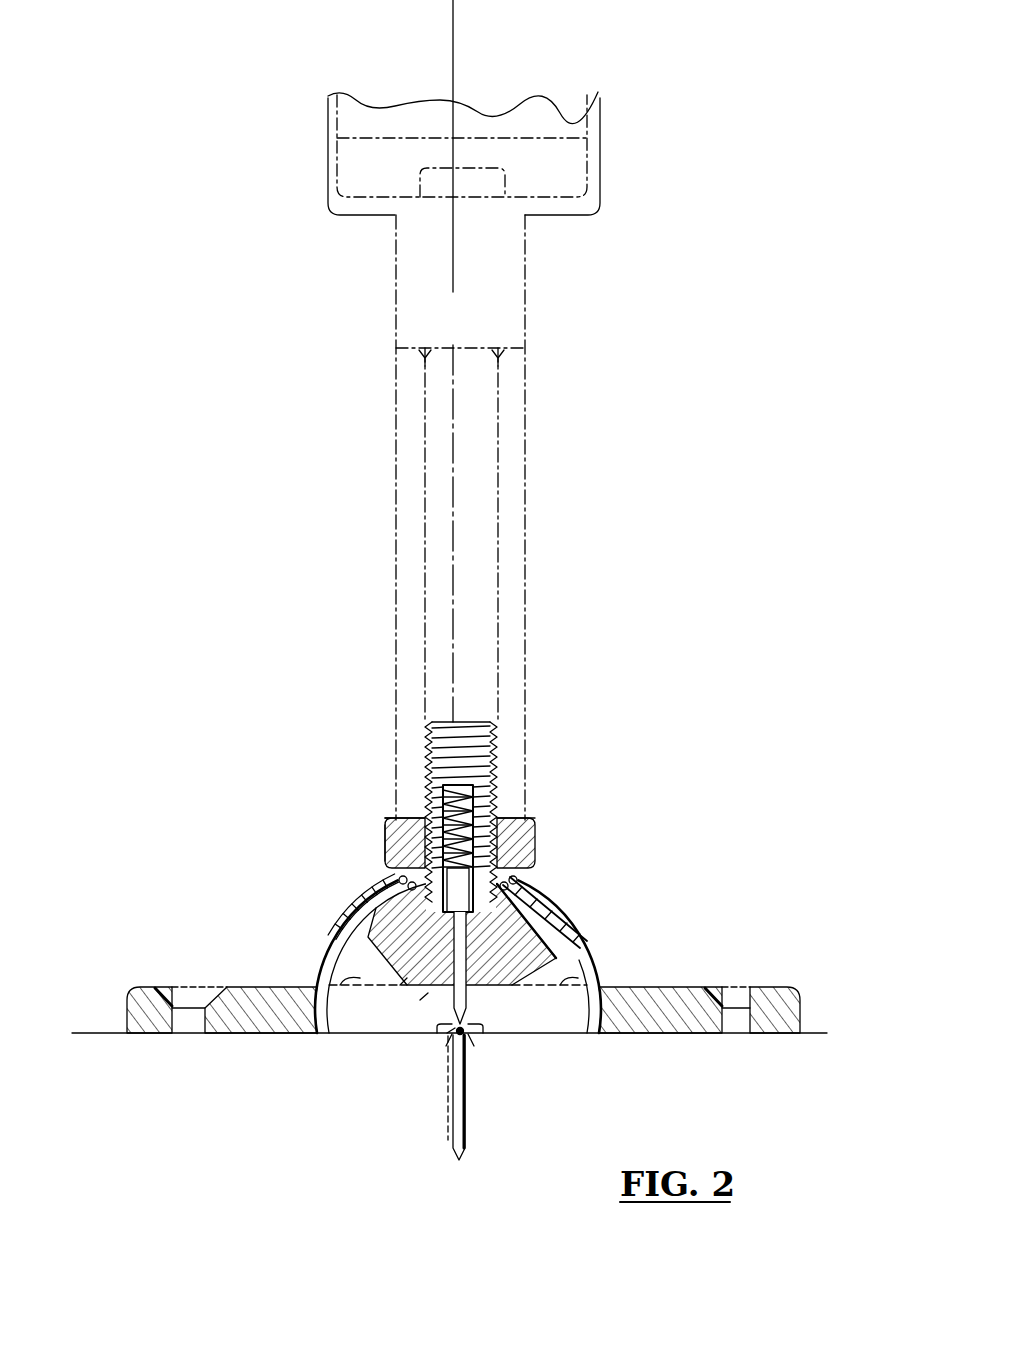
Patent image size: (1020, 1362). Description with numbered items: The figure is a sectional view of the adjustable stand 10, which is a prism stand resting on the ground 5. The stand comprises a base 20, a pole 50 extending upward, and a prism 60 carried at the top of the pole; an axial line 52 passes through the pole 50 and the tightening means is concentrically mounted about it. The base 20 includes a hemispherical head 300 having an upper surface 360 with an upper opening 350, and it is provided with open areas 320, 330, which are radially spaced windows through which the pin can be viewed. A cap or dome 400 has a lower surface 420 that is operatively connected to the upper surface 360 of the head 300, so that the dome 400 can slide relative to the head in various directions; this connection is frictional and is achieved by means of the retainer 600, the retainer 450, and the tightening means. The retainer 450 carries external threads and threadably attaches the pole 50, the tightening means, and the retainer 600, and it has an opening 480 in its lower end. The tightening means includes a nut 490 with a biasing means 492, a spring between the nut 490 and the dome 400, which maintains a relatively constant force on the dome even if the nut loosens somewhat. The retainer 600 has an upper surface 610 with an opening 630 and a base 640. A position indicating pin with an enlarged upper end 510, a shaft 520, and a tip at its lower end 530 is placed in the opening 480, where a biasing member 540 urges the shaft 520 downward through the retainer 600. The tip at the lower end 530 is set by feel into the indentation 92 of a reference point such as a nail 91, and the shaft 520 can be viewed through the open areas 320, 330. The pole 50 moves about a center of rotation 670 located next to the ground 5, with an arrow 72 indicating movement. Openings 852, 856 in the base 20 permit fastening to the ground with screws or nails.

The ground 5 is at (88, 1037).
The adjustable stand 10 is at (700, 333).
The base 20 is at (673, 987).
The pole 50 is at (513, 457).
The axial line 52 is at (453, 543).
The prism 60 is at (567, 130).
The arrow 72 is at (272, 887).
The nail 91 is at (466, 1110).
The indentation 92 is at (524, 1060).
The hemispherical head 300 is at (583, 945).
The open area 320 is at (362, 985).
The open area 330 is at (568, 990).
The upper opening 350 is at (390, 900).
The upper surface 360 is at (338, 940).
The cap or dome 400 is at (580, 913).
The lower surface 420 is at (535, 888).
The retainer 450 is at (497, 738).
The opening 480 is at (523, 812).
The nut 490 is at (392, 872).
The biasing means 492 is at (390, 868).
The upper end 510 is at (535, 826).
The shaft 520 is at (467, 1001).
The lower end 530 is at (467, 1033).
The biasing member 540 is at (497, 782).
The retainer 600 is at (407, 978).
The upper surface 610 is at (383, 893).
The opening 630 is at (455, 1033).
The base 640 is at (428, 993).
The center of rotation 670 is at (455, 1036).
The opening 852 is at (172, 1006).
The opening 856 is at (747, 1007).